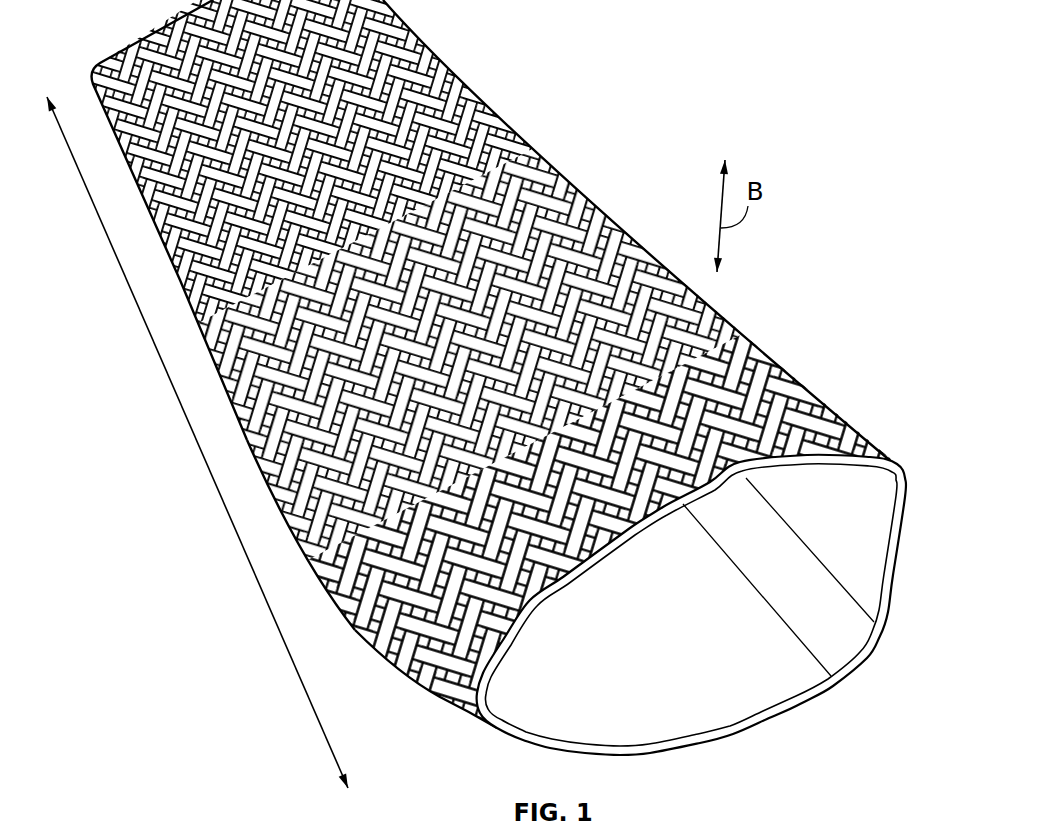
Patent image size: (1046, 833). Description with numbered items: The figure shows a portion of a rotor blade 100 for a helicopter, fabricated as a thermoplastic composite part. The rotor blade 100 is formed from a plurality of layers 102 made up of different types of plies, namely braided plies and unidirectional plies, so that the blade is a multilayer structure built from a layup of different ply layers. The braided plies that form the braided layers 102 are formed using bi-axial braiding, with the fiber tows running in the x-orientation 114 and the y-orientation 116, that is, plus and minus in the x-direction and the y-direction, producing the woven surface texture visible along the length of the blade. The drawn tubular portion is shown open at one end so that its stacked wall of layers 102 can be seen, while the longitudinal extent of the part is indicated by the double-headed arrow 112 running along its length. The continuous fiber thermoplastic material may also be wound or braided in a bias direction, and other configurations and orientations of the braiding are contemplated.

The rotor blade 100 is at (76, 53).
The layers 102 is at (896, 473).
The longitudinal axis 112 is at (206, 466).
The x-orientation 114 is at (312, 583).
The y-orientation 116 is at (458, 693).